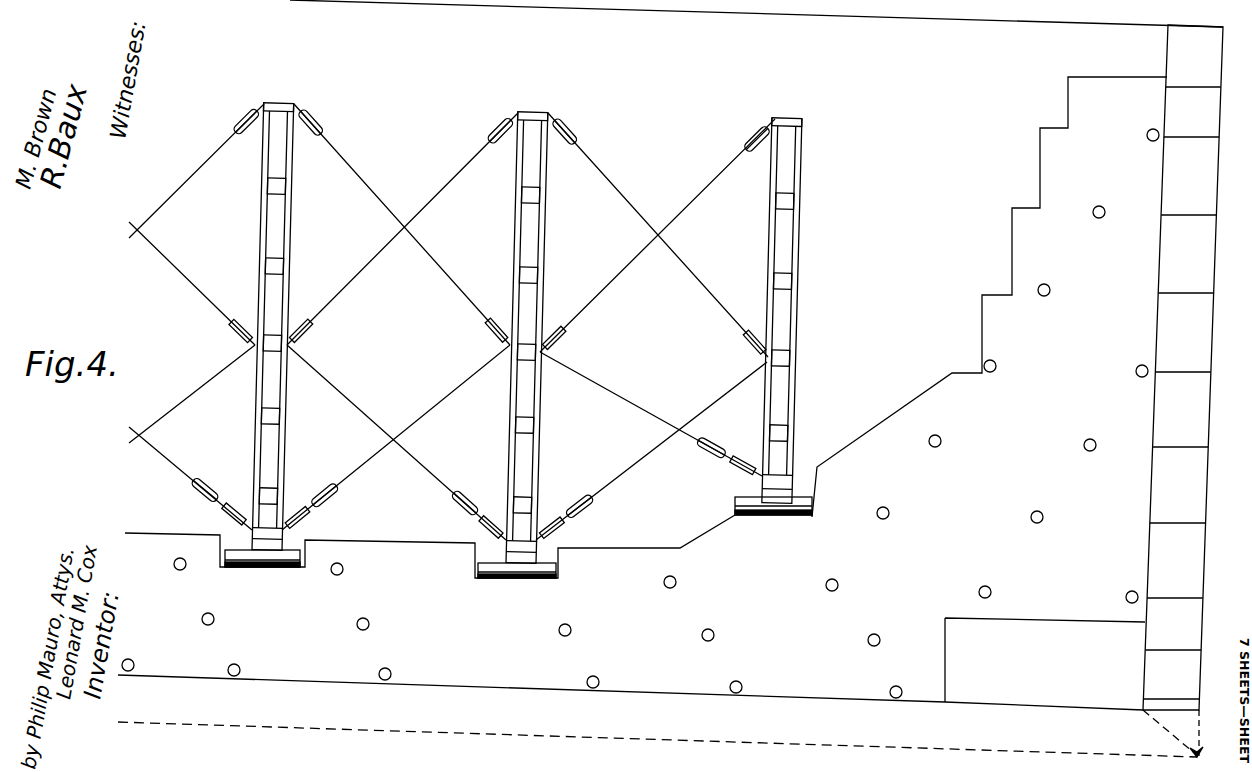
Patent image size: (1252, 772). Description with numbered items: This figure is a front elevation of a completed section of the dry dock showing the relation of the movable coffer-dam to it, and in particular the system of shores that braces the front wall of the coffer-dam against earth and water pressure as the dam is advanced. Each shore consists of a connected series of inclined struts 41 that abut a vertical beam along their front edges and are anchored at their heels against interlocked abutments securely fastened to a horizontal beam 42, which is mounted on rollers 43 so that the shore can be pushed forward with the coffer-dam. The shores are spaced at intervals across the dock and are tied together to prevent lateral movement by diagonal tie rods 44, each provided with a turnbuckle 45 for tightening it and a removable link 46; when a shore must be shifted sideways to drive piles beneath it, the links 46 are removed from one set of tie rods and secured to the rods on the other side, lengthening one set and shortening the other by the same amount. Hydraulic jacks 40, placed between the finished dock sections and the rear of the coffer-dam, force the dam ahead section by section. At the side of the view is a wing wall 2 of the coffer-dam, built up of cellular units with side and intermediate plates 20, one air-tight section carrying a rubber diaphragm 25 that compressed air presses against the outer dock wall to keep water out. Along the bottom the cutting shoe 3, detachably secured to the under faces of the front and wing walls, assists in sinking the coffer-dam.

The wing wall 2 is at (1191, 367).
The cutting shoe 3 is at (1198, 739).
The side and intermediate plates 20 is at (1181, 457).
The diaphragm 25 is at (1158, 327).
The hydraulic jacks 40 is at (570, 635).
The inclined struts 41 is at (285, 410).
The horizontal beam 42 is at (528, 566).
The rollers 43 is at (287, 568).
The diagonal tie rods 44 is at (696, 276).
The turnbuckle 45 is at (498, 129).
The link 46 is at (308, 326).